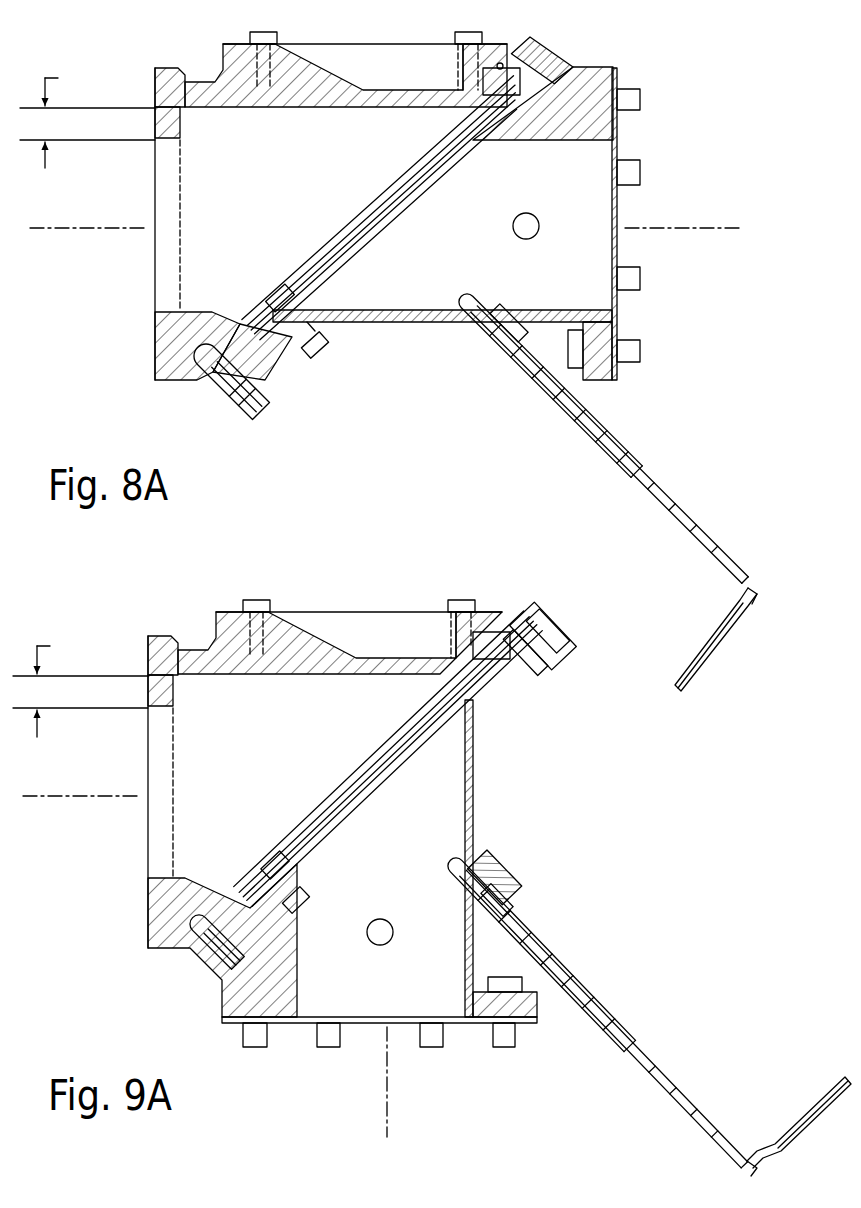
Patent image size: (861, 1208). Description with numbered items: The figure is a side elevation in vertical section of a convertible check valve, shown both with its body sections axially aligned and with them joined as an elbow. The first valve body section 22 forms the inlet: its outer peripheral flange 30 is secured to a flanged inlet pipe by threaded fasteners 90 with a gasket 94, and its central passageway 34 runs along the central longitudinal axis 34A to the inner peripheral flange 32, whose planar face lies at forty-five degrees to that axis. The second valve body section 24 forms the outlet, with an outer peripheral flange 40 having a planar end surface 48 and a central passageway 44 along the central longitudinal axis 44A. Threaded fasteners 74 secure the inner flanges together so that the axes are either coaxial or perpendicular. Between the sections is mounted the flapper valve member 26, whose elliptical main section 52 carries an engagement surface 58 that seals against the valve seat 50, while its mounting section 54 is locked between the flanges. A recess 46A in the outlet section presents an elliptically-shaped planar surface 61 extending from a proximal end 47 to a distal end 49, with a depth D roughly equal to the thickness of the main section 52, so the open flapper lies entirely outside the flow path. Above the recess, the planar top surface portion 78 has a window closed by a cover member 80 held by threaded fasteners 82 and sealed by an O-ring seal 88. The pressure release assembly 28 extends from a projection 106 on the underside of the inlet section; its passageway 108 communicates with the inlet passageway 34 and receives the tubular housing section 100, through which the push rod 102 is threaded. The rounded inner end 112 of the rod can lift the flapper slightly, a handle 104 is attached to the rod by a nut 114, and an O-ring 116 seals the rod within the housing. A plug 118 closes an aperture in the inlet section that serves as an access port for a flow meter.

In FIG. 8A, the first valve body section 22 is at (594, 62).
In FIG. 9A, the first valve body section 22 is at (480, 1022).
In FIG. 8A, the second valve body section 24 is at (212, 73).
In FIG. 9A, the second valve body section 24 is at (203, 645).
In FIG. 8A, the flapper valve member 26 is at (368, 203).
In FIG. 9A, the flapper valve member 26 is at (360, 768).
In FIG. 8A, the pressure release assembly 28 is at (693, 542).
In FIG. 9A, the pressure release assembly 28 is at (685, 1105).
In FIG. 8A, the peripheral flange 30 is at (603, 380).
In FIG. 9A, the peripheral flange 30 is at (525, 1022).
In FIG. 8A, the peripheral flange 32 is at (278, 368).
In FIG. 9A, the peripheral flange 32 is at (540, 612).
In FIG. 8A, the central passageway 34 is at (580, 205).
In FIG. 9A, the central passageway 34 is at (377, 1002).
In FIG. 8A, the central longitudinal axis 34A is at (700, 230).
In FIG. 9A, the central longitudinal axis 34A is at (390, 1118).
In FIG. 8A, the peripheral flange 40 is at (168, 70).
In FIG. 9A, the peripheral flange 40 is at (152, 634).
In FIG. 8A, the central passageway 44 is at (172, 250).
In FIG. 9A, the central passageway 44 is at (162, 818).
In FIG. 8A, the central longitudinal axis 44A is at (115, 228).
In FIG. 9A, the central longitudinal axis 44A is at (100, 792).
In FIG. 8A, the recess 46A is at (384, 118).
In FIG. 9A, the recess 46A is at (377, 686).
In FIG. 8A, the proximal end 47 is at (477, 106).
In FIG. 9A, the proximal end 47 is at (467, 676).
In FIG. 8A, the planar end surface 48 is at (158, 90).
In FIG. 9A, the planar end surface 48 is at (148, 660).
In FIG. 8A, the distal end 49 is at (188, 113).
In FIG. 9A, the distal end 49 is at (180, 680).
In FIG. 8A, the valve seat 50 is at (307, 358).
In FIG. 9A, the valve seat 50 is at (293, 893).
In FIG. 8A, the main section 52 is at (330, 247).
In FIG. 9A, the main section 52 is at (325, 815).
In FIG. 8A, the mounting section 54 is at (505, 80).
In FIG. 9A, the mounting section 54 is at (497, 660).
In FIG. 8A, the engagement surface 58 is at (288, 283).
In FIG. 9A, the engagement surface 58 is at (282, 853).
In FIG. 8A, the elliptically-shaped planar surface 61 is at (292, 110).
In FIG. 9A, the elliptically-shaped planar surface 61 is at (280, 675).
In FIG. 8A, the threaded fasteners 74 is at (257, 415).
In FIG. 9A, the threaded fasteners 74 is at (558, 665).
In FIG. 8A, the planar top surface portion 78 is at (238, 64).
In FIG. 9A, the planar top surface portion 78 is at (232, 634).
In FIG. 8A, the cover member 80 is at (303, 72).
In FIG. 9A, the cover member 80 is at (293, 638).
In FIG. 8A, the threaded fasteners 82 is at (268, 32).
In FIG. 9A, the threaded fasteners 82 is at (262, 600).
In FIG. 8A, the O-ring seal 88 is at (243, 62).
In FIG. 9A, the O-ring seal 88 is at (232, 634).
In FIG. 8A, the threaded fasteners 90 is at (647, 288).
In FIG. 9A, the threaded fasteners 90 is at (327, 1040).
In FIG. 8A, the gasket 94 is at (615, 370).
In FIG. 9A, the gasket 94 is at (222, 1017).
In FIG. 8A, the tubular housing section 100 is at (540, 397).
In FIG. 9A, the tubular housing section 100 is at (560, 945).
In FIG. 8A, the push rod 102 is at (657, 487).
In FIG. 9A, the push rod 102 is at (655, 1053).
In FIG. 8A, the handle 104 is at (712, 635).
In FIG. 9A, the handle 104 is at (807, 1108).
In FIG. 8A, the projection 106 is at (450, 338).
In FIG. 9A, the projection 106 is at (500, 868).
In FIG. 8A, the passageway 108 is at (455, 323).
In FIG. 9A, the passageway 108 is at (470, 895).
In FIG. 8A, the inner end 112 is at (460, 302).
In FIG. 9A, the inner end 112 is at (440, 860).
In FIG. 8A, the nut 114 is at (757, 592).
In FIG. 9A, the nut 114 is at (742, 1163).
In FIG. 8A, the O-ring 116 is at (466, 360).
In FIG. 9A, the O-ring 116 is at (483, 912).
In FIG. 8A, the plug 118 is at (524, 212).
In FIG. 9A, the plug 118 is at (380, 932).
In FIG. 8A, the depth D is at (60, 87).
In FIG. 9A, the depth D is at (53, 655).